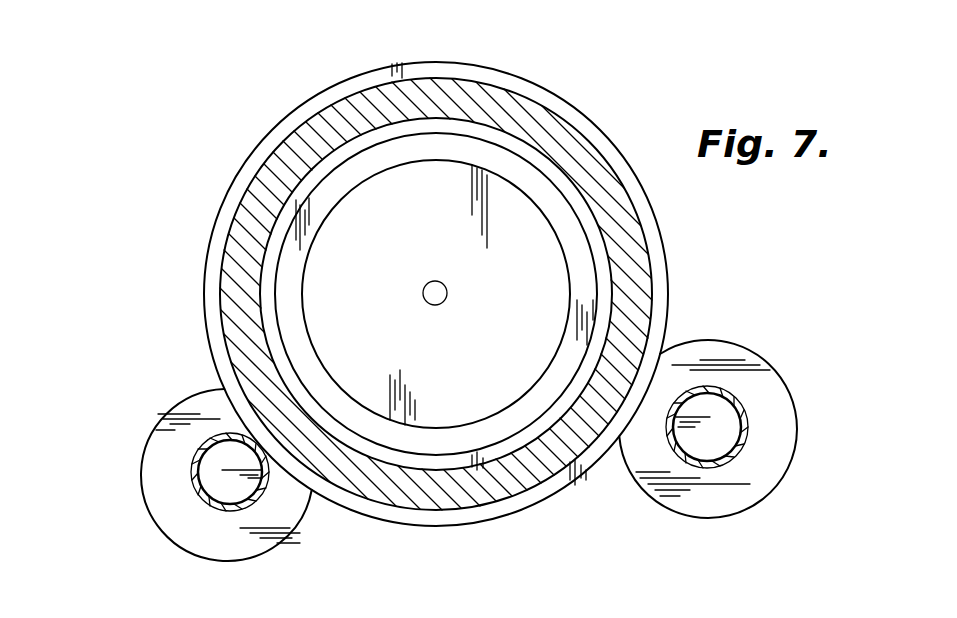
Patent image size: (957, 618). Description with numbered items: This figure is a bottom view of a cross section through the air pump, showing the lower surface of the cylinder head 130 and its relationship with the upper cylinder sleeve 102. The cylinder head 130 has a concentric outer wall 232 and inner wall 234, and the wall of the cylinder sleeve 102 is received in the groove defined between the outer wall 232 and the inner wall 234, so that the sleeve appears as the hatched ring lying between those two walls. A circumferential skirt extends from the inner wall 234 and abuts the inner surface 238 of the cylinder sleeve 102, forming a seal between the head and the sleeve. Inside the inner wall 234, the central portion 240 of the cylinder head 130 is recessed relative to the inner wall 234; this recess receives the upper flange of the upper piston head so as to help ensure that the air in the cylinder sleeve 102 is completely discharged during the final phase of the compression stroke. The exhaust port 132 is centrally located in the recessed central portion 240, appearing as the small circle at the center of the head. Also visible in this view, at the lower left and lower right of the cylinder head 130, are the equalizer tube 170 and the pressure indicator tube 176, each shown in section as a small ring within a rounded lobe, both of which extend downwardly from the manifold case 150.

The outer wall 232 is at (243, 167).
The upper cylinder sleeve 102 is at (263, 187).
The inner surface 238 is at (270, 225).
The inner wall 234 is at (280, 255).
The central portion 240 is at (313, 291).
The cylinder head 130 is at (401, 261).
The exhaust port 132 is at (428, 307).
The manifold case 150 is at (158, 437).
The equalizer tube 170 is at (193, 467).
The pressure indicator tube 176 is at (737, 400).